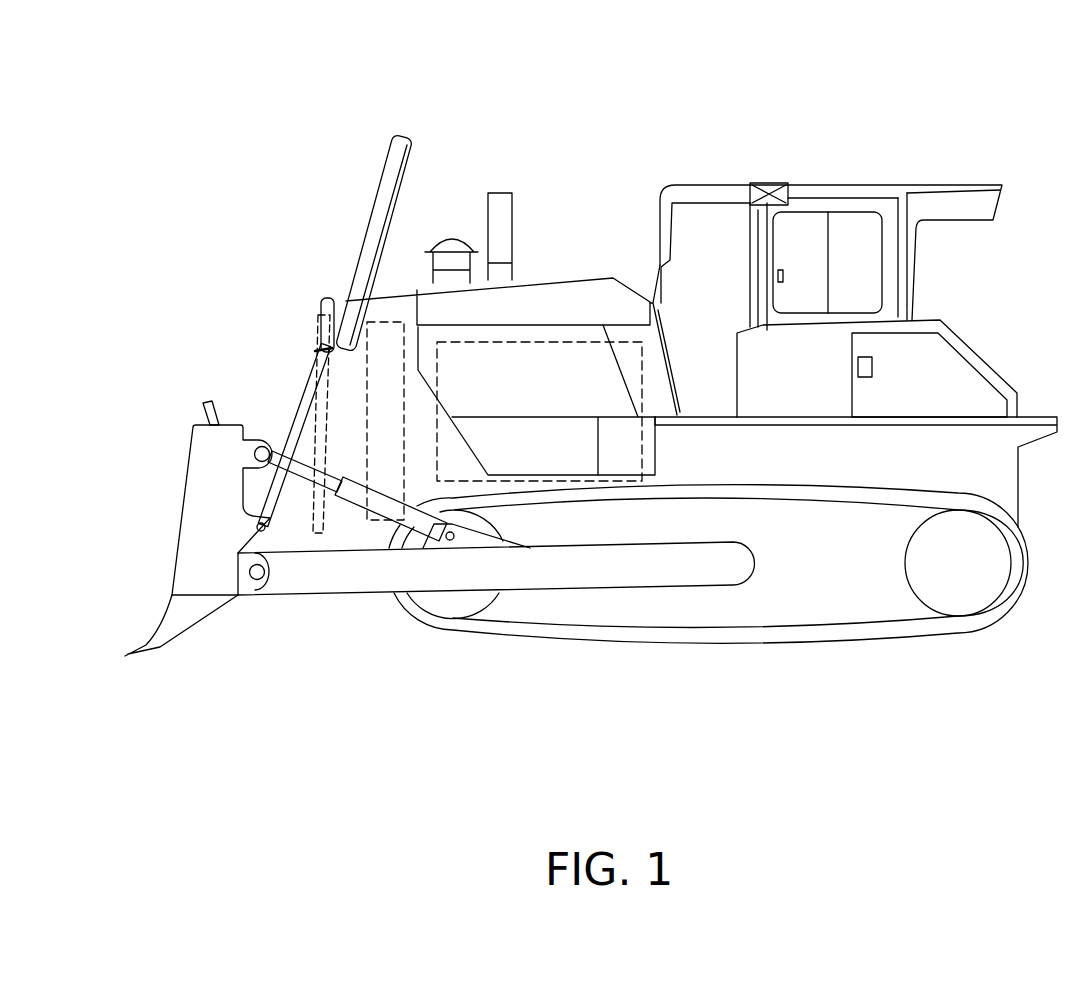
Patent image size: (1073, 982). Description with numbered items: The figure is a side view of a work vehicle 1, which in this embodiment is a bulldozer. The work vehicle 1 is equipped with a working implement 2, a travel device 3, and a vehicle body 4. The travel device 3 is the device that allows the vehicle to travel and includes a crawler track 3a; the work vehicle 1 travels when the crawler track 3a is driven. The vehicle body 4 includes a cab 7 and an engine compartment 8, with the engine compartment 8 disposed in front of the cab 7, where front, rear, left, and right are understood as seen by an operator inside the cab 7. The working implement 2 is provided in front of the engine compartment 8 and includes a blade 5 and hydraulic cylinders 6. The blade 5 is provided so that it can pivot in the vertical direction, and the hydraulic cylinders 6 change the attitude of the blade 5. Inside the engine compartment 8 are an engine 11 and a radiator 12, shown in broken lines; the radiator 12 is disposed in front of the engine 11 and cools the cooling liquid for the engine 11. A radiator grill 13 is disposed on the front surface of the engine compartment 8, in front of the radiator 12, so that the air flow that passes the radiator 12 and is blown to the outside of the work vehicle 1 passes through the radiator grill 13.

The work vehicle 1 is at (286, 126).
The working implement 2 is at (211, 387).
The travel device 3 is at (543, 652).
The crawler track 3a is at (662, 636).
The vehicle body 4 is at (834, 118).
The blade 5 is at (188, 525).
The hydraulic cylinders 6 is at (302, 420).
The cab 7 is at (697, 182).
The engine compartment 8 is at (578, 297).
The engine 11 is at (548, 340).
The radiator 12 is at (395, 322).
The radiator grill 13 is at (312, 355).